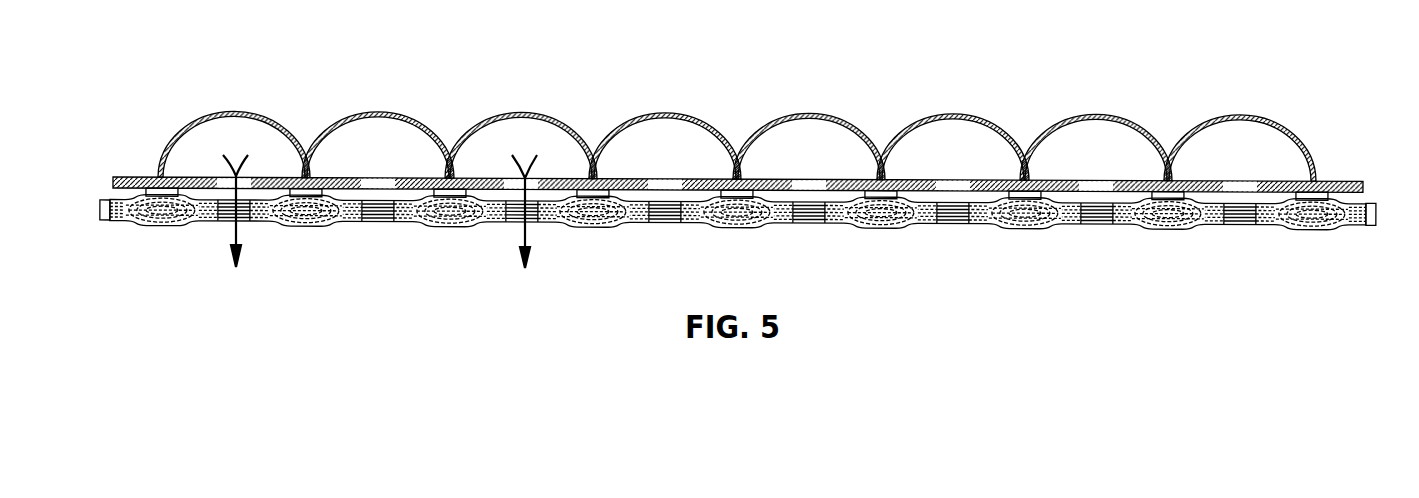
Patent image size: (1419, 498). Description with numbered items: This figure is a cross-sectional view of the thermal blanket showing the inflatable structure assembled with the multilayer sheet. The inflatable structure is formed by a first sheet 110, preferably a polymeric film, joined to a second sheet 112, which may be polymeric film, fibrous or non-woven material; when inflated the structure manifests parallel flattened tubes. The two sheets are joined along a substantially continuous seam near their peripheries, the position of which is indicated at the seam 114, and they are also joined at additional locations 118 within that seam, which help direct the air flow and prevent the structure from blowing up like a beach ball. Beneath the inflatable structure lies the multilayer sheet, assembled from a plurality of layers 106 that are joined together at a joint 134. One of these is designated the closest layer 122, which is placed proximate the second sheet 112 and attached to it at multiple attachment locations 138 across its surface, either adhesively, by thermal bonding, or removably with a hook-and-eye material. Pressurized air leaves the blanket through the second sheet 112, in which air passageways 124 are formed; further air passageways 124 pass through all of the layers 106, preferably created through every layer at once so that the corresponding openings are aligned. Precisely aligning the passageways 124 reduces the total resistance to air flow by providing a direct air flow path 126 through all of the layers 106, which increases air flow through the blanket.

The layers 106 is at (1040, 225).
The first sheet 110 is at (808, 113).
The second sheet 112 is at (923, 190).
The seam 114 is at (113, 178).
The locations 118 is at (593, 166).
The closest layer 122 is at (1192, 202).
The air passageways 124 is at (1095, 187).
The direct air flow path 126 is at (238, 231).
The joint of layers 134 is at (100, 212).
The attachment locations 138 is at (457, 180).